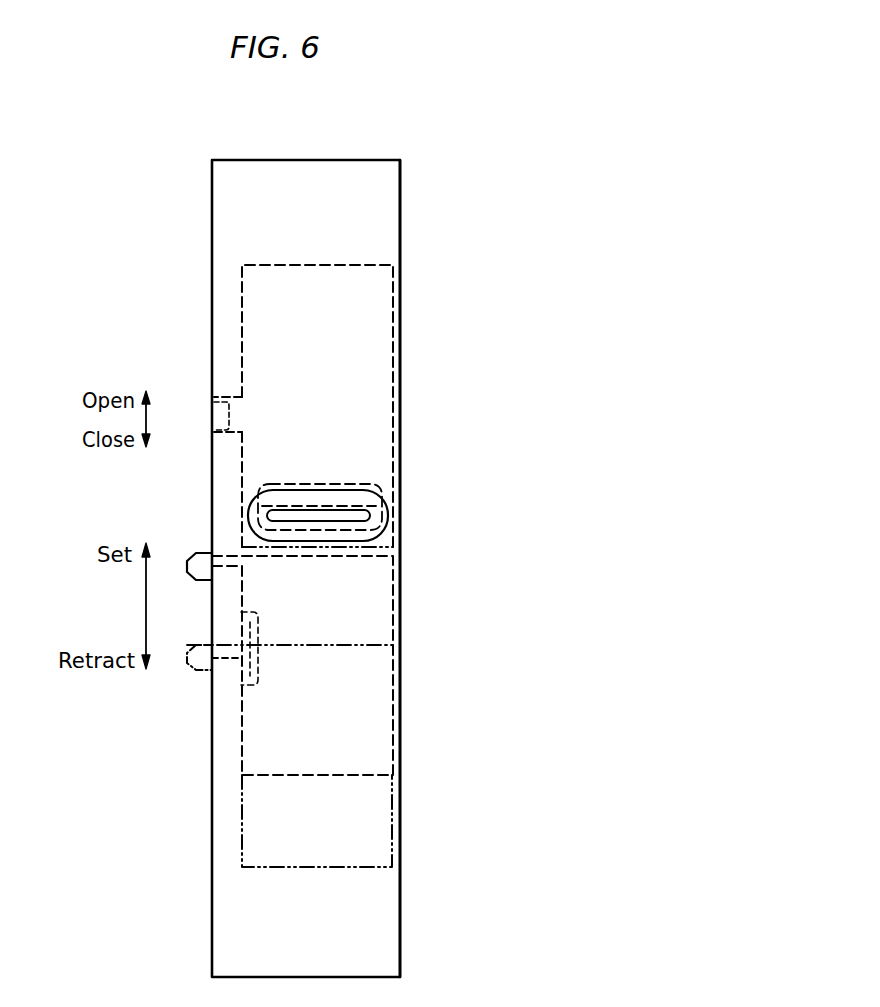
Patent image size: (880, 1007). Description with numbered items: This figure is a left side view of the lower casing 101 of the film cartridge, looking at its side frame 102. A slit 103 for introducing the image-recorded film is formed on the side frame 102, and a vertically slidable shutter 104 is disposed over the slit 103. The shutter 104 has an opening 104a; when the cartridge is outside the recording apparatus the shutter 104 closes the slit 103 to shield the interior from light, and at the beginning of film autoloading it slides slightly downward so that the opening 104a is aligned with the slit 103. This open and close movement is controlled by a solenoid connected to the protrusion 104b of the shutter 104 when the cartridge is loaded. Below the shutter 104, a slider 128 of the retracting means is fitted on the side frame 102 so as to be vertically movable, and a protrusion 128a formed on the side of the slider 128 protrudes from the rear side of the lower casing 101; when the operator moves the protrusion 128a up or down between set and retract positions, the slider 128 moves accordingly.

The lower casing 101 is at (347, 156).
The side frame 102 is at (396, 190).
The slit 103 is at (368, 514).
The shutter 104 is at (386, 303).
The opening 104a is at (332, 483).
The protrusion 104b is at (212, 398).
The slider 128 is at (378, 688).
The protrusion 128a is at (197, 553).